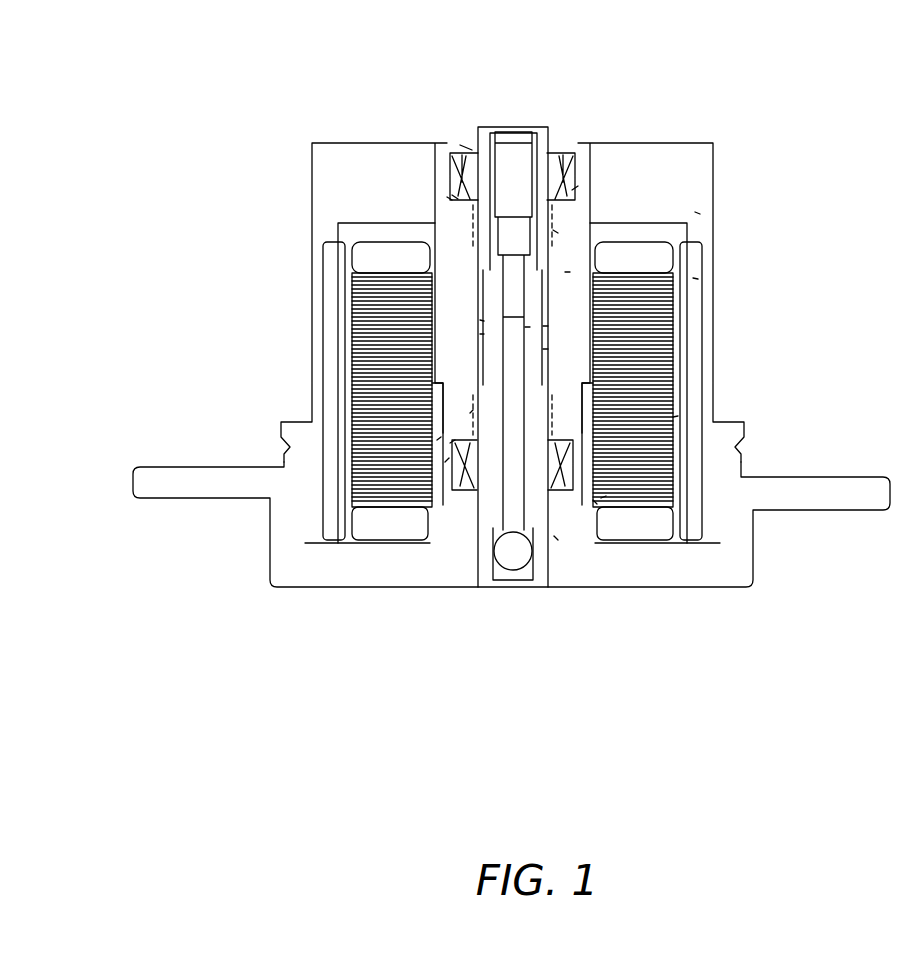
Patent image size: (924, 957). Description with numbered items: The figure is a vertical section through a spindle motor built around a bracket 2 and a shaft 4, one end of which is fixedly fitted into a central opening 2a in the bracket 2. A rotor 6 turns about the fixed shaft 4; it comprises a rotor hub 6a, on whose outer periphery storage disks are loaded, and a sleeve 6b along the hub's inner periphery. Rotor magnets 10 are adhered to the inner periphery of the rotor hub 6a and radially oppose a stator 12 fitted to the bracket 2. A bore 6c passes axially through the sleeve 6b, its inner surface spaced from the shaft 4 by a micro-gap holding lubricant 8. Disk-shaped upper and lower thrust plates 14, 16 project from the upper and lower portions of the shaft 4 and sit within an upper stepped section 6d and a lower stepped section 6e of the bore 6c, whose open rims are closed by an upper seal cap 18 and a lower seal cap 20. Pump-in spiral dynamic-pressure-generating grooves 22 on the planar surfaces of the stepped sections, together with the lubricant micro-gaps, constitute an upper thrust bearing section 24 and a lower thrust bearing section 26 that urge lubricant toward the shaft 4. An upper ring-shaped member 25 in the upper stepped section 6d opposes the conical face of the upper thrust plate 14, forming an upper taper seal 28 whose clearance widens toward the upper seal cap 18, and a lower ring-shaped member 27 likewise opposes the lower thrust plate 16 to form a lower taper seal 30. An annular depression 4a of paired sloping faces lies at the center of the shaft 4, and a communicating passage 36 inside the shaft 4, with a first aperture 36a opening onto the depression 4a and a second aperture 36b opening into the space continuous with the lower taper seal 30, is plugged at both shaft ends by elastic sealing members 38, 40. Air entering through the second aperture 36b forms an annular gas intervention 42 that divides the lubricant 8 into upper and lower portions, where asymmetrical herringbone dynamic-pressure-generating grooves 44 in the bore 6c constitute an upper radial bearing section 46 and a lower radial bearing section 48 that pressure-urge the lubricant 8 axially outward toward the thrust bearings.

The bracket 2 is at (770, 498).
The central opening 2a is at (546, 530).
The shaft 4 is at (490, 393).
The annular depression 4a is at (480, 320).
The rotor 6 is at (713, 143).
The rotor hub 6a is at (695, 212).
The sleeve 6b is at (440, 230).
The bore 6c is at (480, 334).
The upper stepped section 6d is at (437, 212).
The lower stepped section 6e is at (445, 462).
The lubricant 8 is at (525, 327).
The rotor magnets 10 is at (693, 278).
The stator 12 is at (673, 417).
The upper thrust plate 14 is at (560, 153).
The lower thrust plate 16 is at (485, 455).
The upper seal cap 18 is at (466, 150).
The lower seal cap 20 is at (568, 492).
The dynamic-pressure-generating grooves 22 is at (452, 195).
The upper thrust bearing section 24 is at (574, 190).
The upper ring-shaped member 25 is at (452, 158).
The lower thrust bearing section 26 is at (593, 500).
The lower ring-shaped member 27 is at (437, 440).
The upper retaining ring 28 is at (575, 165).
The lower taper seal 30 is at (395, 495).
The communicating passage 36 is at (510, 365).
The first aperture 36a is at (543, 326).
The second aperture 36b is at (554, 536).
The sealing member 38 is at (565, 272).
The sealing member 40 is at (500, 568).
The annular gas intervention 42 is at (543, 349).
The dynamic-pressure-generating grooves 44 is at (553, 230).
The upper radial bearing section 46 is at (447, 197).
The lower radial bearing section 48 is at (455, 440).